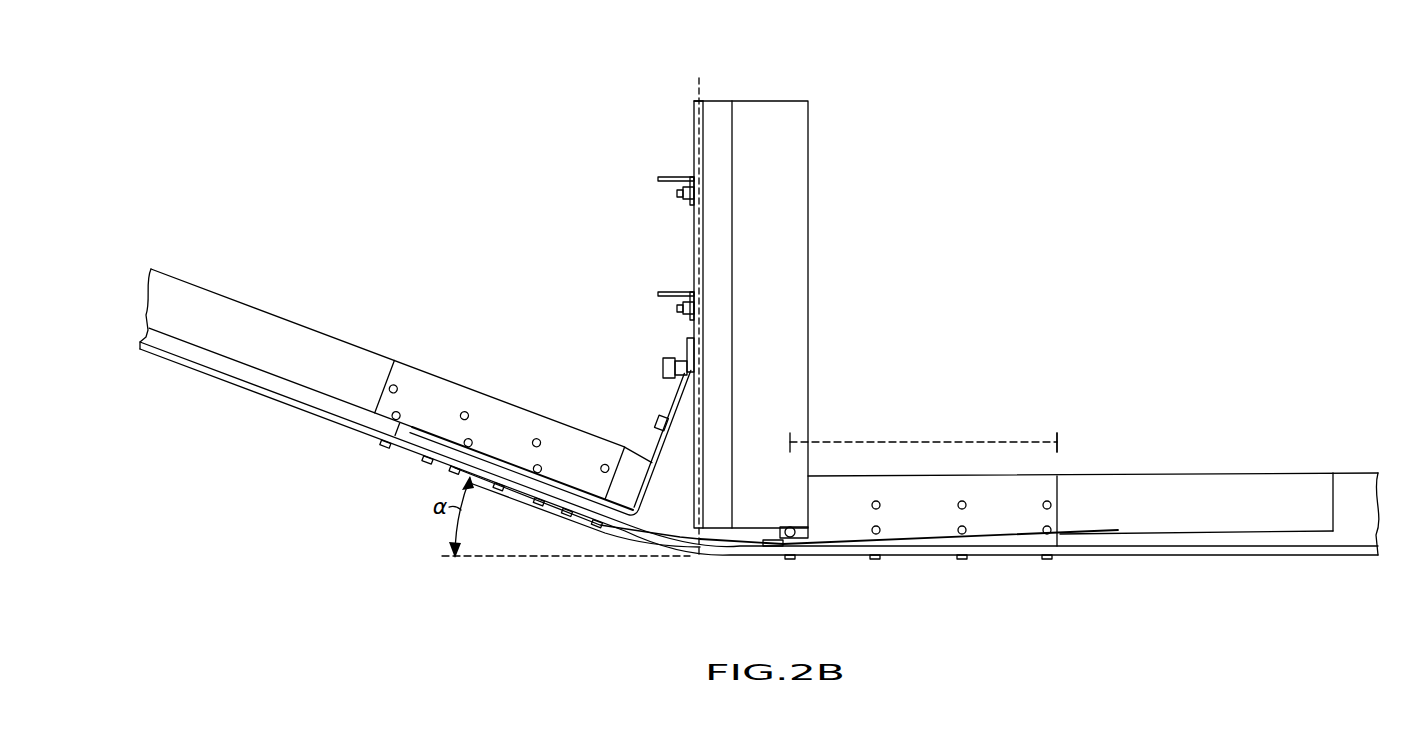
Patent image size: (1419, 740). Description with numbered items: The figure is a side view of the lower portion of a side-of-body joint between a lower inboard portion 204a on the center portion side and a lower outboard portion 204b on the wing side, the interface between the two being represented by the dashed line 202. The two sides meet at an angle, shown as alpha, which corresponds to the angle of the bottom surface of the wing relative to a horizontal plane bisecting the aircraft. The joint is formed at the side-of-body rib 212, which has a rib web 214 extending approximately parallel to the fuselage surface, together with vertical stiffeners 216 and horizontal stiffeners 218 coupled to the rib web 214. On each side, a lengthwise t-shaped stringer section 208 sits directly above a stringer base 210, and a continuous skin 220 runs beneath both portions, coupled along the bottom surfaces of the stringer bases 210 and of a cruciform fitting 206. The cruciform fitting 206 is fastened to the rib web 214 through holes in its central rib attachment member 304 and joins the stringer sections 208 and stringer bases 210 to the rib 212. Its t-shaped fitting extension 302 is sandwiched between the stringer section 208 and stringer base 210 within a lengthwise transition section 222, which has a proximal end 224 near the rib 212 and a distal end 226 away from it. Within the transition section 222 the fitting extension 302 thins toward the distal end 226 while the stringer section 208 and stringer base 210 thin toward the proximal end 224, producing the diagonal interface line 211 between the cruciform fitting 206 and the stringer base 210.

The interface 202 is at (703, 89).
The lower inboard portion 204a is at (1250, 597).
The lower outboard portion 204b is at (318, 480).
The cruciform fitting 206 is at (668, 533).
The t-shaped stringer section 208 is at (303, 326).
The stringer base 210 is at (285, 395).
The diagonal interface line 211 is at (537, 490).
The side-of-body rib 212 is at (767, 303).
The rib web 214 is at (694, 106).
The vertical stiffener 216 is at (802, 222).
The horizontal stiffener 218 is at (668, 177).
The skin 220 is at (210, 378).
The transition section 222 is at (1010, 440).
The proximal end 224 is at (790, 443).
The distal end 226 is at (1060, 442).
The t-shaped fitting extension 302 is at (592, 520).
The central rib attachment member 304 is at (690, 345).